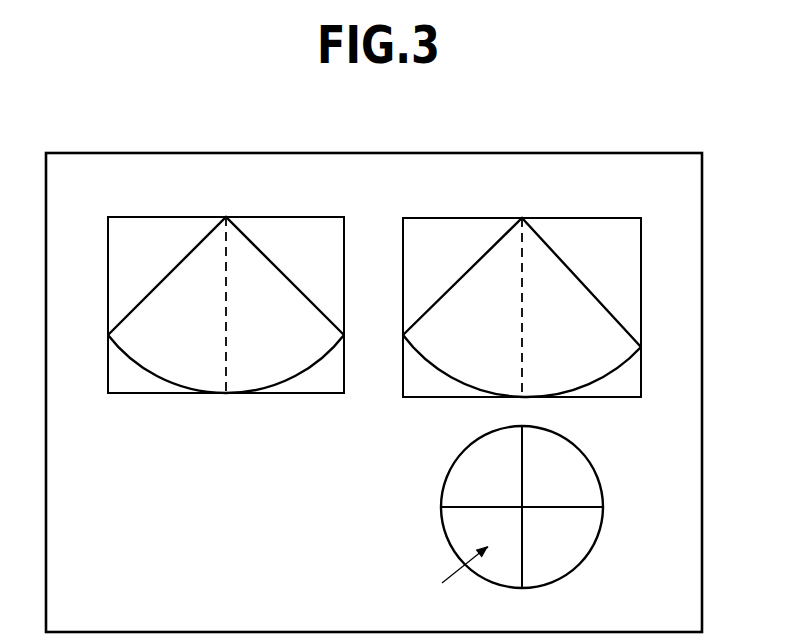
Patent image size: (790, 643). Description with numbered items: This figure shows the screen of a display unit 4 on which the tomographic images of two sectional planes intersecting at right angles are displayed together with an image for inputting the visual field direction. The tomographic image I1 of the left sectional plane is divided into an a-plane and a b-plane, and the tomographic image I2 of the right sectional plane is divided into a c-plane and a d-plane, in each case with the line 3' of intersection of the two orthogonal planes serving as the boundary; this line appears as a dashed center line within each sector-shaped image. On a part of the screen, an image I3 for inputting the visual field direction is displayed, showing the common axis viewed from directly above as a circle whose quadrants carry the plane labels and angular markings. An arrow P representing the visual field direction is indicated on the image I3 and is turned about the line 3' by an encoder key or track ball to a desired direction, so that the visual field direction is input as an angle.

The display unit 4 is at (387, 153).
The tomographic image I1 is at (140, 300).
The tomographic image I2 is at (598, 300).
The image for inputting the visual field direction I3 is at (600, 478).
The line of intersection 3' is at (400, 362).
The arrow P is at (486, 559).